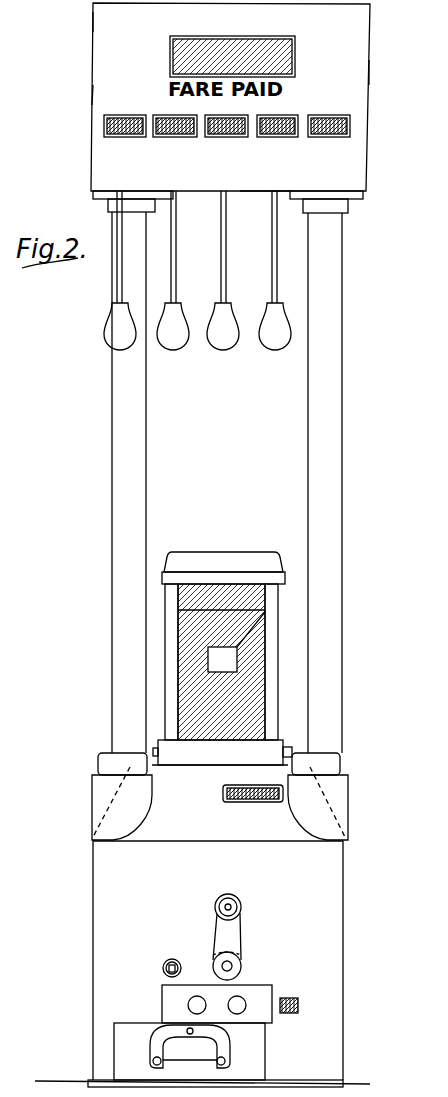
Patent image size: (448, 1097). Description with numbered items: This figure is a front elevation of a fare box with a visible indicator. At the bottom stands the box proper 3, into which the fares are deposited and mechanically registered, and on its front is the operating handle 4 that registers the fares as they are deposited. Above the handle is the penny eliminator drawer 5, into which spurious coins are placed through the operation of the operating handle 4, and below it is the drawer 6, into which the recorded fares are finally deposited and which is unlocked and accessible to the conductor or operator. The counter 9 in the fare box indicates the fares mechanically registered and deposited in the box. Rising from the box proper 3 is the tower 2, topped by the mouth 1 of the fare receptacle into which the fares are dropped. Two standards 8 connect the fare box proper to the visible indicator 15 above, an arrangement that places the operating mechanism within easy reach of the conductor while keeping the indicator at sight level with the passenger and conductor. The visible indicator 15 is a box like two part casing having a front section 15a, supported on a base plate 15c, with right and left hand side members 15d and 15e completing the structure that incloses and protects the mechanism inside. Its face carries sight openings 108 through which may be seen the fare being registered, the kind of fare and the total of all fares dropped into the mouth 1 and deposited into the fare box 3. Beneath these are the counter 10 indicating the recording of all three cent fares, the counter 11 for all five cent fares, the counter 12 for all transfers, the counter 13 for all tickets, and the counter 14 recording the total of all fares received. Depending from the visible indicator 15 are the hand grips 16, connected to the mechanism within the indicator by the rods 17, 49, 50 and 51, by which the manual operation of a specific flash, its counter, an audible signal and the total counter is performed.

The mouth of fare receptacle 1 is at (232, 552).
The tower 2 is at (165, 608).
The box proper 3 is at (93, 918).
The operating handle 4 is at (237, 933).
The penny eliminator drawer 5 is at (162, 995).
The drawer 6 is at (114, 1038).
The standards 8 is at (112, 445).
The counter 9 is at (237, 803).
The counter 10 is at (107, 116).
The counter 11 is at (196, 138).
The counter 12 is at (247, 138).
The counter 13 is at (290, 116).
The counter 14 is at (329, 116).
The visible indicator 15 is at (110, 55).
The front section 15a is at (100, 92).
The base plate 15c is at (262, 191).
The right hand side member 15d is at (368, 72).
The left hand side member 15e is at (93, 22).
The hand grips 16 is at (262, 335).
The rod 17 is at (123, 254).
The rod 49 is at (176, 236).
The rod 50 is at (227, 253).
The rod 51 is at (278, 253).
The sight openings 108 is at (296, 45).